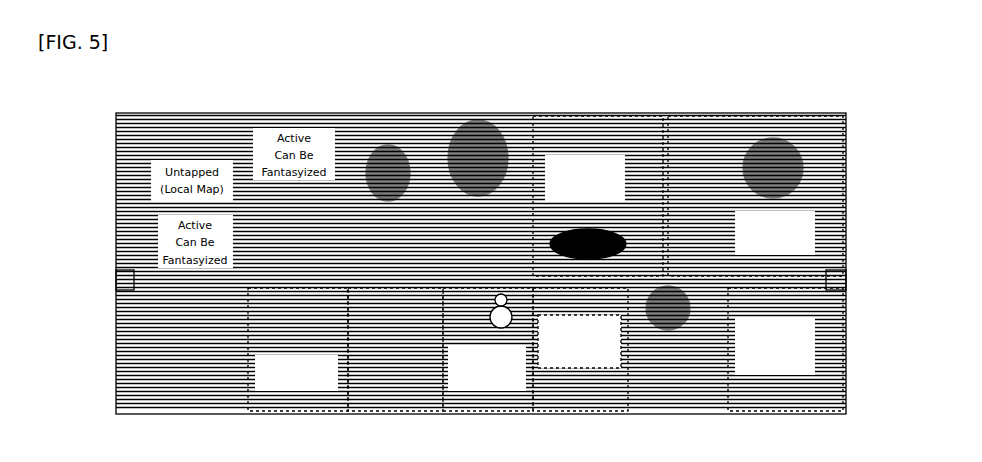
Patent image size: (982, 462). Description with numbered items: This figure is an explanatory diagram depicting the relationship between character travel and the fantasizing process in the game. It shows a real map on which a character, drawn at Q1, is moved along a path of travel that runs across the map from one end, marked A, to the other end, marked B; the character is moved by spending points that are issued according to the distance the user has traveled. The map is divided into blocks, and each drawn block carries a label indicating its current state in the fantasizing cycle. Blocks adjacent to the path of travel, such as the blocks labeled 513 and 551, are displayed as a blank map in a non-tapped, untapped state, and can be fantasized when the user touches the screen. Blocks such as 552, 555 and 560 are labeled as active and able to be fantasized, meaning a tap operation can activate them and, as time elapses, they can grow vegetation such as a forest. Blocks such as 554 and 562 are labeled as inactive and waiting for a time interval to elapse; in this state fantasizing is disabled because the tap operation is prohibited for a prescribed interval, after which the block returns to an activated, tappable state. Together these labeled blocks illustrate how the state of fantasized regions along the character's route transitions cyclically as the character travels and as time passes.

The untapped region (blank map) 513 is at (642, 168).
The inactive region waiting for time to expire 562 is at (690, 152).
The untapped region (blank map) 551 is at (272, 387).
The map region 552 is at (380, 380).
The inactive region 554 is at (473, 383).
The active region status indicator Q1 is at (528, 362).
The active region that can be fantasyized 555 is at (570, 362).
The active region that can be fantasyized 560 is at (710, 383).
The start point of path A is at (110, 268).
The end point of path B is at (830, 271).